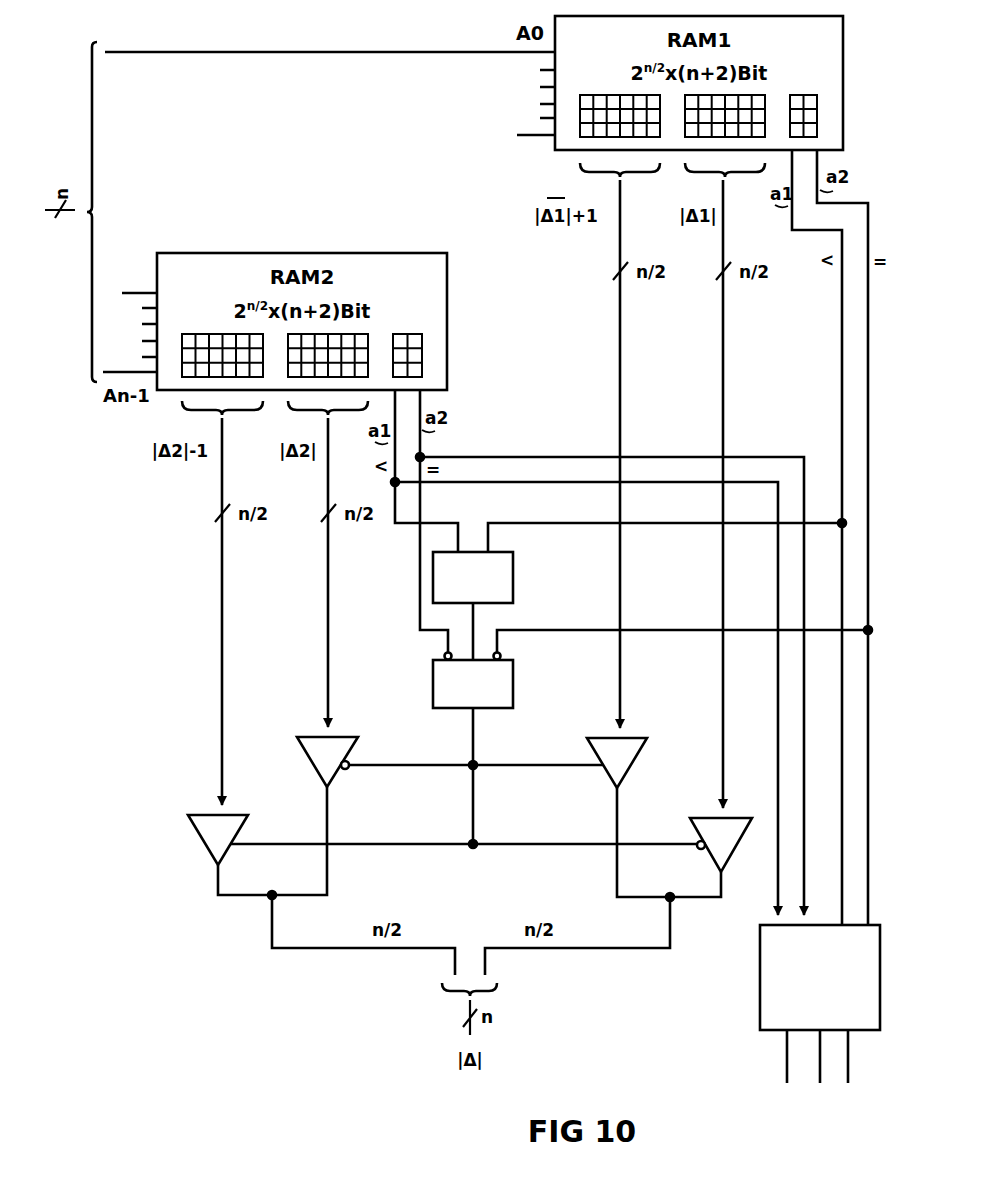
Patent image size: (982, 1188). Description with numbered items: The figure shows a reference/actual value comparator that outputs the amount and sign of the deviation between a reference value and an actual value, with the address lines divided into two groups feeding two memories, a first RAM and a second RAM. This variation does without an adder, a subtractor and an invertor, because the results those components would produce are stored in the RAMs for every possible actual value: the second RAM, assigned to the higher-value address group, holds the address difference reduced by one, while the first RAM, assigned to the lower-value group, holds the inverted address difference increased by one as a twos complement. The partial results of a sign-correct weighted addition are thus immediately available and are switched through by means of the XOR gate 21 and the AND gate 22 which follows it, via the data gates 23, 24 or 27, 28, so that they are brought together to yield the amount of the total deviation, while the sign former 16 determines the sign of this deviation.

The sign former 16 is at (760, 997).
The XOR gate 21 is at (513, 576).
The AND gate 22 is at (513, 686).
The data gate 23 is at (309, 764).
The data gate 24 is at (704, 817).
The data gate 27 is at (202, 844).
The data gate 28 is at (633, 752).